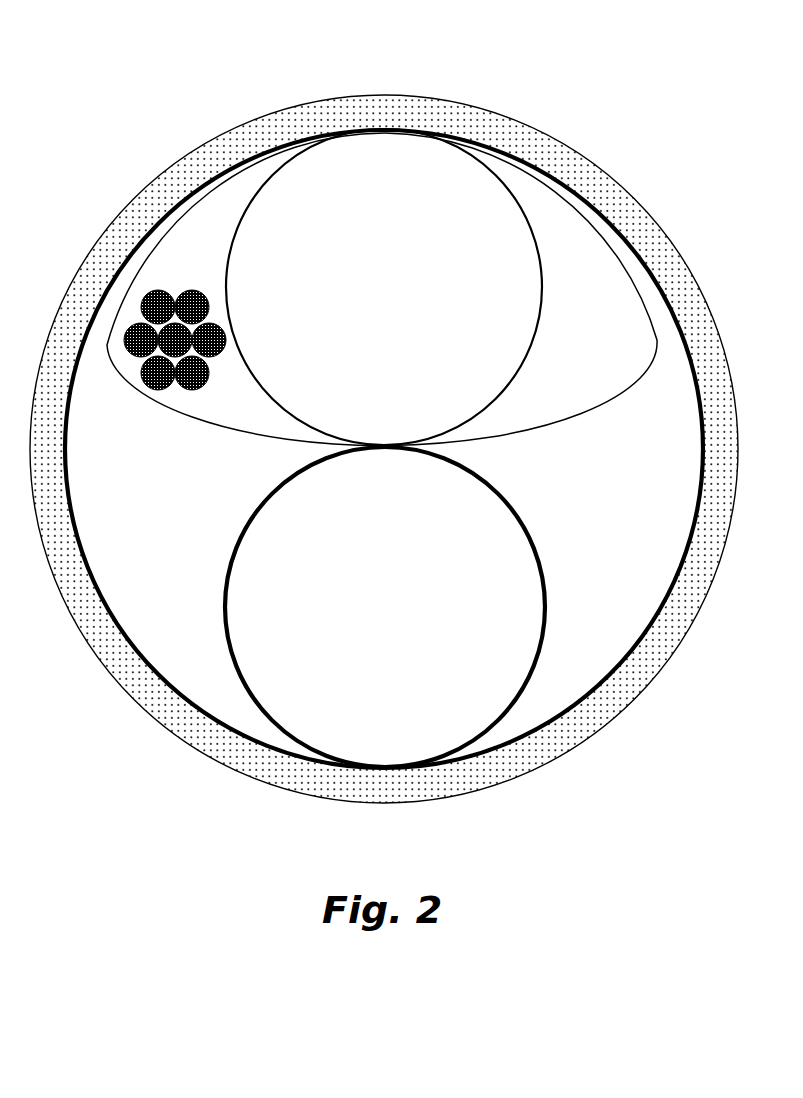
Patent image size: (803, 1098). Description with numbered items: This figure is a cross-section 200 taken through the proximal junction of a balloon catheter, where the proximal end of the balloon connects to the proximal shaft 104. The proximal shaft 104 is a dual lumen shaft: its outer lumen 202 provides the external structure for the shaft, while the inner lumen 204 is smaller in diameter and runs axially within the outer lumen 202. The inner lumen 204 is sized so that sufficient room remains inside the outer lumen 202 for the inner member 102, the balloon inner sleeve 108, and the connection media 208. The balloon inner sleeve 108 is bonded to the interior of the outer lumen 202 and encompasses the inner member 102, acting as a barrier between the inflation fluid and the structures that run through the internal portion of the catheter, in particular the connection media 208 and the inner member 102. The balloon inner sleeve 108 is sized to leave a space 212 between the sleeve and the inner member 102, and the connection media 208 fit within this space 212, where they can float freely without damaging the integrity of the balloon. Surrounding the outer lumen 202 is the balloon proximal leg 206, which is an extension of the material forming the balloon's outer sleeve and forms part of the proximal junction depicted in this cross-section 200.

The fiber optic cable 200 is at (120, 111).
The inner member 102 is at (238, 227).
The balloon inner sleeve 108 is at (540, 428).
The space 212 is at (600, 360).
The connection media 208 is at (141, 376).
The inner lumen 204 is at (232, 575).
The outer lumen 202 is at (668, 580).
The proximal shaft 104 is at (572, 708).
The balloon proximal leg 206 is at (162, 728).